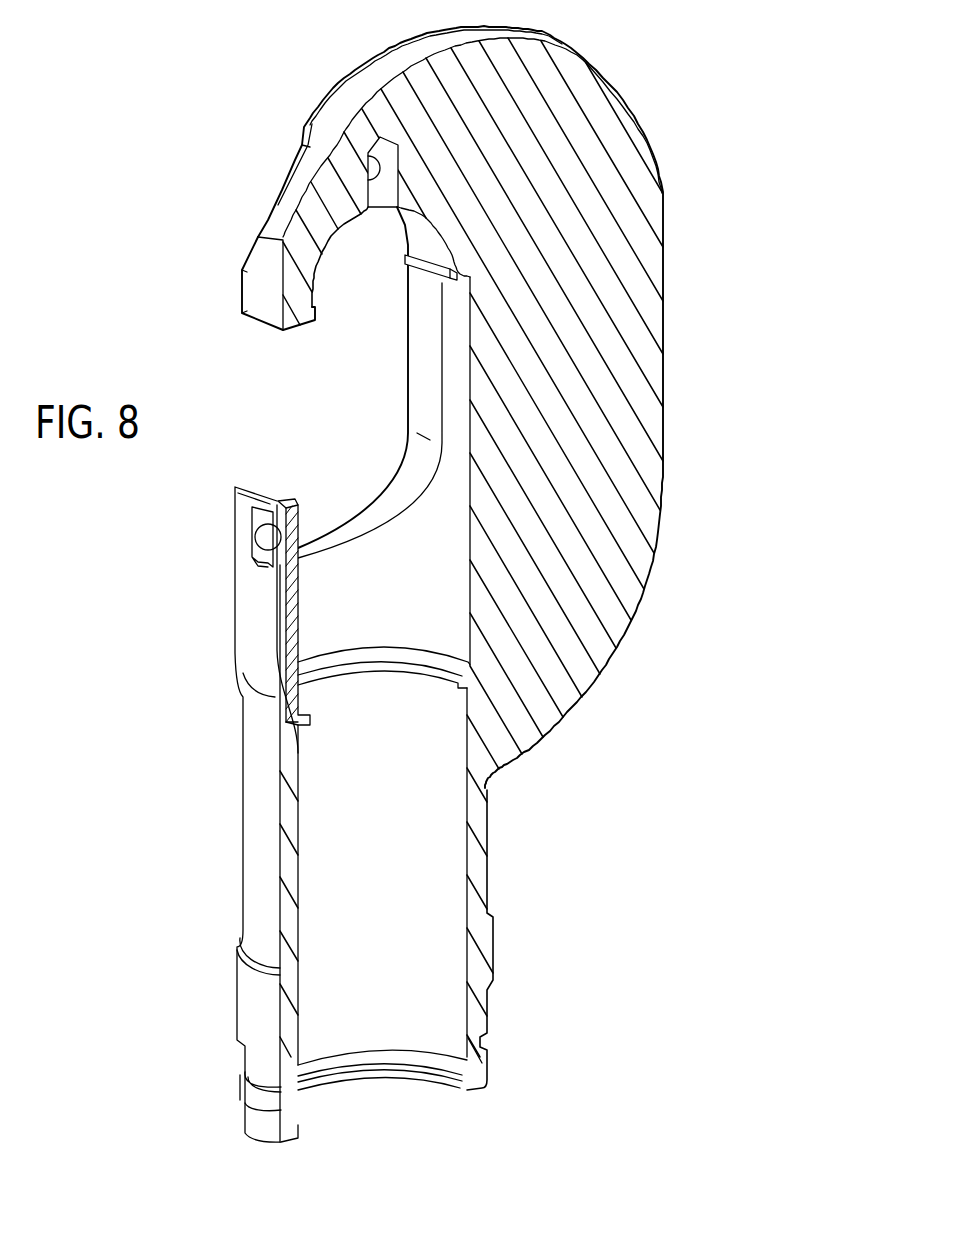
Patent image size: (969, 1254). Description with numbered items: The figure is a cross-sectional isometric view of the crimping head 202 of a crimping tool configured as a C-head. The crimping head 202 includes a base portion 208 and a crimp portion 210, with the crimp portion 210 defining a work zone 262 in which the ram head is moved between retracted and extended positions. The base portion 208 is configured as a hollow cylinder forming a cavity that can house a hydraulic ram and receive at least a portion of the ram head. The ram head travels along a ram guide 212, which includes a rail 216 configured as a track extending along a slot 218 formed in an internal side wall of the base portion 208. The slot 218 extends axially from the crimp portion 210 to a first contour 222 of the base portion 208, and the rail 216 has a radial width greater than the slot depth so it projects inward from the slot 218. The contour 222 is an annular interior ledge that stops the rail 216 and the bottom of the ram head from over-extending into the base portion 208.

The crimping head 202 is at (148, 301).
The base portion 208 is at (499, 955).
The crimp portion 210 is at (682, 388).
The ram guide 212 is at (302, 589).
The rail 216 is at (297, 517).
The slot 218 is at (283, 628).
The first contour 222 is at (262, 703).
The work zone 262 is at (274, 378).